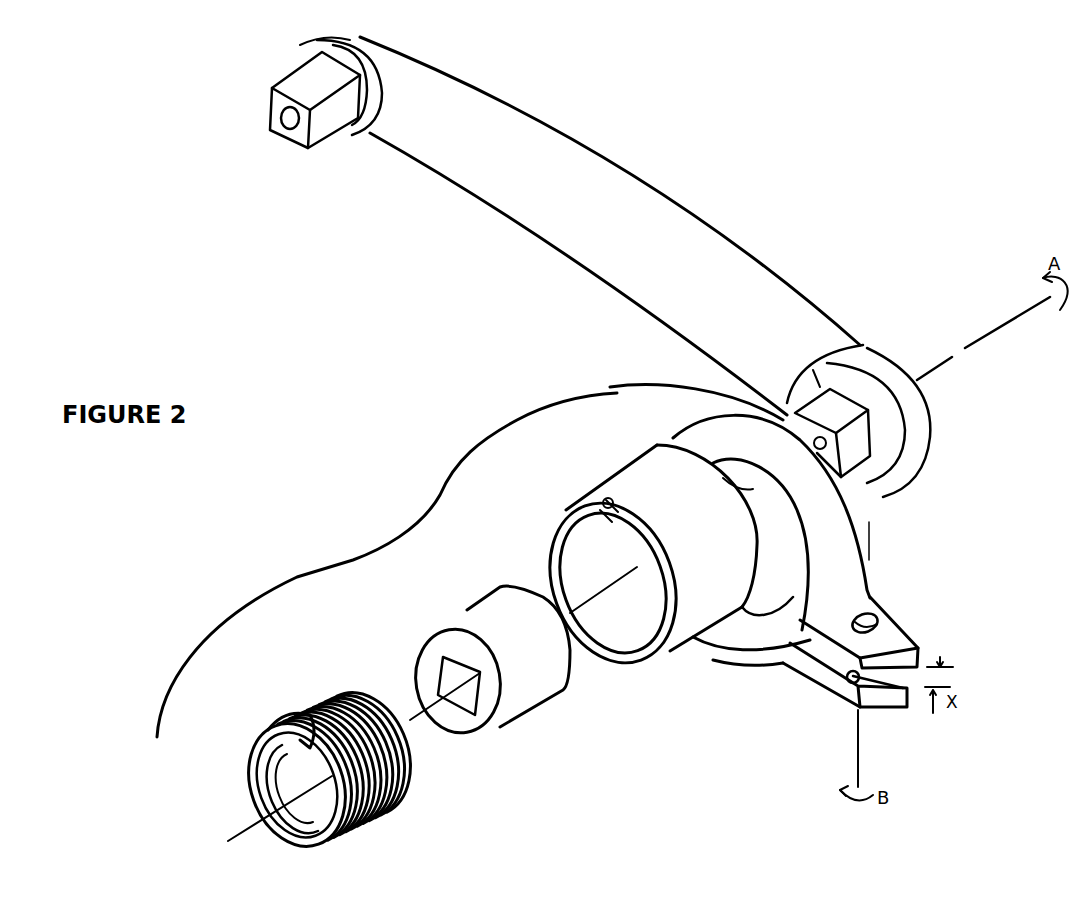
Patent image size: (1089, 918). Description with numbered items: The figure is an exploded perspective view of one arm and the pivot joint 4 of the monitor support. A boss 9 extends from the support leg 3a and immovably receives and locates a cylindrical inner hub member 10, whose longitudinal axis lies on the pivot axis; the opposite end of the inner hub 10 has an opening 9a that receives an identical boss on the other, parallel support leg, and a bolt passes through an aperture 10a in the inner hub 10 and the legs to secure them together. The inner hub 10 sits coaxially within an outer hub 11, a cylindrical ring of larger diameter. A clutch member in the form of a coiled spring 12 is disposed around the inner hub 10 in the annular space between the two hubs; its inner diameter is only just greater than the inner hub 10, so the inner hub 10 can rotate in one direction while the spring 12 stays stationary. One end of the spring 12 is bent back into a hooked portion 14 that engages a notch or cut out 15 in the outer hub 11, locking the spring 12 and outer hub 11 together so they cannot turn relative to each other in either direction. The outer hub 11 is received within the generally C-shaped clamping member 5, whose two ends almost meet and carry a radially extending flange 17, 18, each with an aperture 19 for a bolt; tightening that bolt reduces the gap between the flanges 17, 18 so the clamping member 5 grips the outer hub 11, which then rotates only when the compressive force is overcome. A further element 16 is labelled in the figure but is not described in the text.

The support leg 3a is at (613, 167).
The pivot joint 4 is at (353, 560).
The clamping member 5 is at (683, 417).
The boss 9 is at (857, 458).
The opening 9a is at (466, 695).
The inner hub member 10 is at (477, 692).
The aperture 10a is at (622, 395).
The outer hub 11 is at (567, 507).
The coiled spring 12 is at (302, 757).
The hooked portion 14 is at (300, 720).
The notch 15 is at (607, 500).
The lower lip 16 is at (707, 653).
The flange 17 is at (903, 625).
The flange 18 is at (800, 670).
The aperture 19 is at (848, 679).